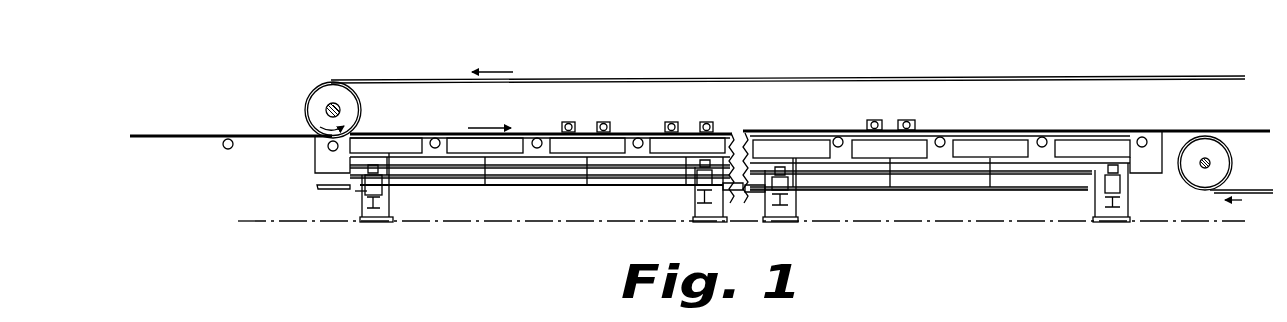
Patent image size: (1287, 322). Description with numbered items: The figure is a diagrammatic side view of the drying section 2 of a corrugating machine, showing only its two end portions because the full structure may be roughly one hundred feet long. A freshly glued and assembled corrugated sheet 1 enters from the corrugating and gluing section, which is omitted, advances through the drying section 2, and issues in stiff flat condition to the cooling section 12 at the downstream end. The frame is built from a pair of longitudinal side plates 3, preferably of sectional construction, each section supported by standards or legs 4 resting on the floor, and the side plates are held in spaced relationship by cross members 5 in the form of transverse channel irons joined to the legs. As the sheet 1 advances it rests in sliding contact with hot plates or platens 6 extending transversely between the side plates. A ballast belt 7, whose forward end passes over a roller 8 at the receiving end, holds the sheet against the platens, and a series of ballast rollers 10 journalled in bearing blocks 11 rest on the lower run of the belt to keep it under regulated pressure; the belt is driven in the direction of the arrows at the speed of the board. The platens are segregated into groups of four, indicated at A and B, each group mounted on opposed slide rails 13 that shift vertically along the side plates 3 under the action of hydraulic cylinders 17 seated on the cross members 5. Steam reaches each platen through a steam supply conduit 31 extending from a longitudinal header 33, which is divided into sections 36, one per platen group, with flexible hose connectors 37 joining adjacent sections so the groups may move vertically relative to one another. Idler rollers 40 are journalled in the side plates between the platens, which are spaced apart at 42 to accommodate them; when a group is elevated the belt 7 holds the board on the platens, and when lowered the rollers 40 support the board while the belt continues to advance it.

The corrugated sheet 1 is at (171, 133).
The drying section 2 is at (775, 126).
The side plates 3 is at (316, 162).
The standards or legs 4 is at (393, 212).
The cross members 5 is at (701, 201).
The platens 6 is at (389, 150).
The ballast belt 7 is at (545, 133).
The roller 8 is at (337, 102).
The ballast rollers 10 is at (574, 121).
The bearing blocks 11 is at (680, 123).
The cooling section 12 is at (1215, 170).
The slide rails 13 is at (566, 158).
The hydraulic cylinders 17 is at (383, 188).
The steam supply conduit 31 is at (486, 179).
The header 33 is at (452, 185).
The header sections 36 is at (618, 186).
The flexible hose connectors 37 is at (750, 193).
The idler rollers 40 is at (436, 137).
The platen spacing 42 is at (947, 138).
The platen group A is at (514, 147).
The platen group B is at (998, 146).